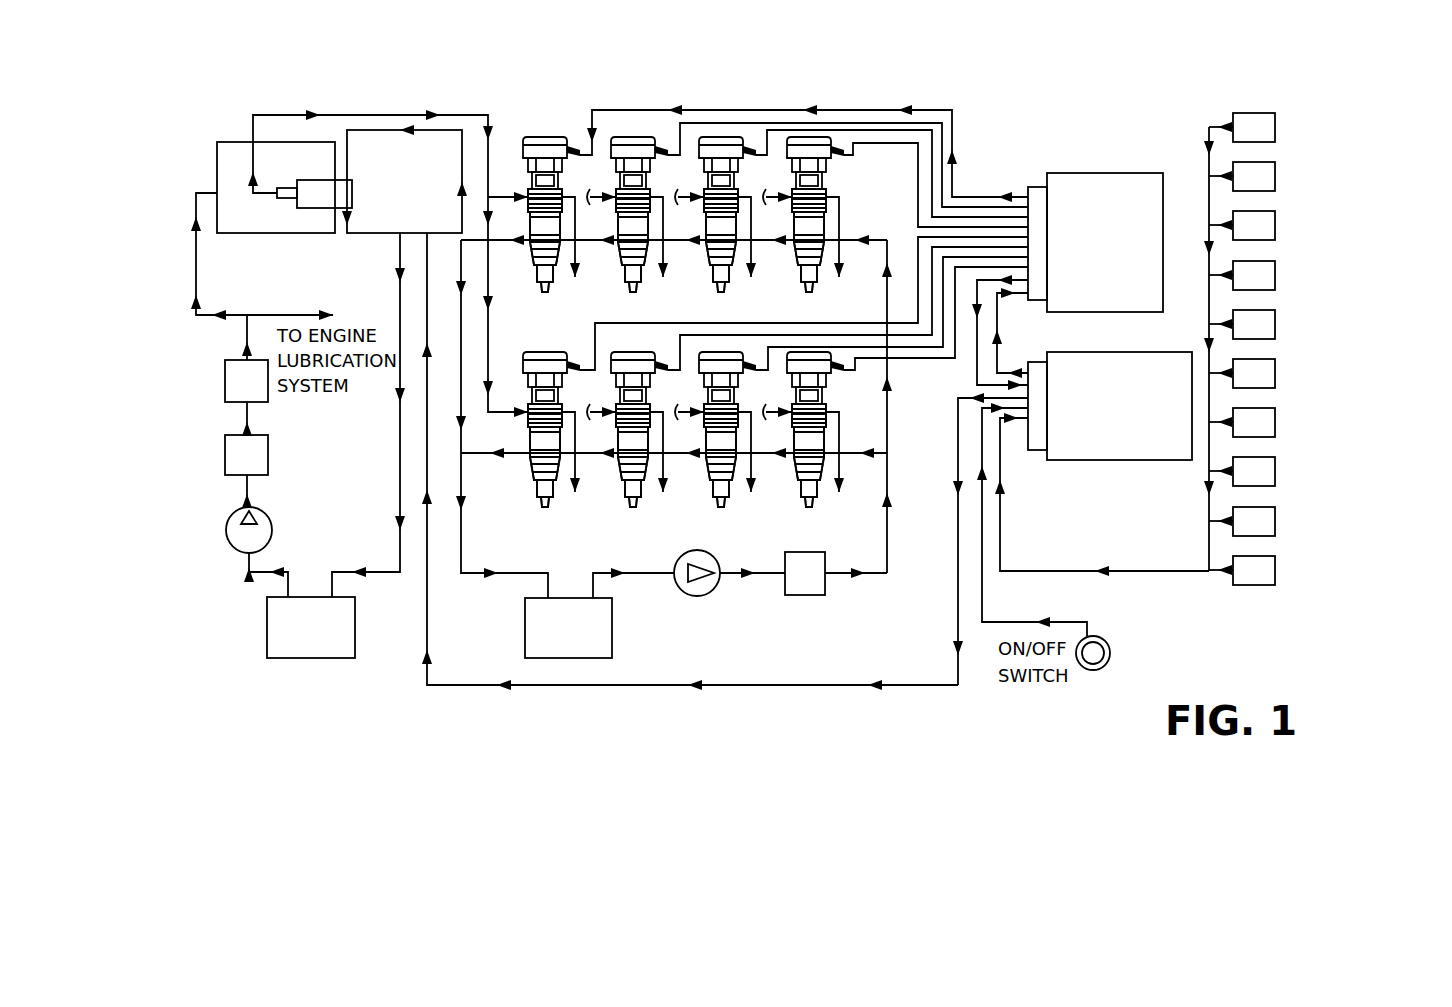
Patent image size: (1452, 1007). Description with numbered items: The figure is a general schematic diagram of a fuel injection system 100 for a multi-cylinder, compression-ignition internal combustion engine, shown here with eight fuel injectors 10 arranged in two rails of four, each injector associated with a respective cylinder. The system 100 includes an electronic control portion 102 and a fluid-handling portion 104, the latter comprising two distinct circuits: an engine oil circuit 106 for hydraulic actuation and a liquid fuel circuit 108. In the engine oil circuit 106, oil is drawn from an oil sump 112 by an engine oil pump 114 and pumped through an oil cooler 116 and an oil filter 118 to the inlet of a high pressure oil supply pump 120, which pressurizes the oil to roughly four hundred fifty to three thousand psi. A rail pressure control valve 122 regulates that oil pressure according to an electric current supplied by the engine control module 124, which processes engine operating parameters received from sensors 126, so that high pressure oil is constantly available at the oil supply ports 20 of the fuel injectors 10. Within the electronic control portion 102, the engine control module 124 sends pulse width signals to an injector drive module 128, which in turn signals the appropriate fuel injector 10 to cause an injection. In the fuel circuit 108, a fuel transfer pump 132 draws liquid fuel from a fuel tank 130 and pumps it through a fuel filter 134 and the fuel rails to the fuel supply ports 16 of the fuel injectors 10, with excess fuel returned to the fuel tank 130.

The fuel injector 10 is at (541, 137).
The fuel supply port 16 is at (528, 243).
The oil supply port 20 is at (526, 186).
The fuel injection system 100 is at (748, 74).
The electronic control portion 102 is at (1047, 158).
The fluid-handling portion 104 is at (405, 708).
The engine oil circuit 106 is at (322, 676).
The fuel circuit 108 is at (637, 640).
The oil sump 112 is at (273, 658).
The engine oil pump 114 is at (235, 550).
The oil cooler 116 is at (228, 475).
The oil filter 118 is at (227, 402).
The high pressure oil supply pump 120 is at (288, 227).
The rail pressure control valve 122 is at (404, 179).
The engine control module 124 is at (1110, 406).
The sensors 126 is at (1365, 94).
The injector drive module 128 is at (1095, 242).
The fuel tank 130 is at (525, 657).
The fuel transfer pump 132 is at (717, 590).
The fuel filter 134 is at (797, 595).